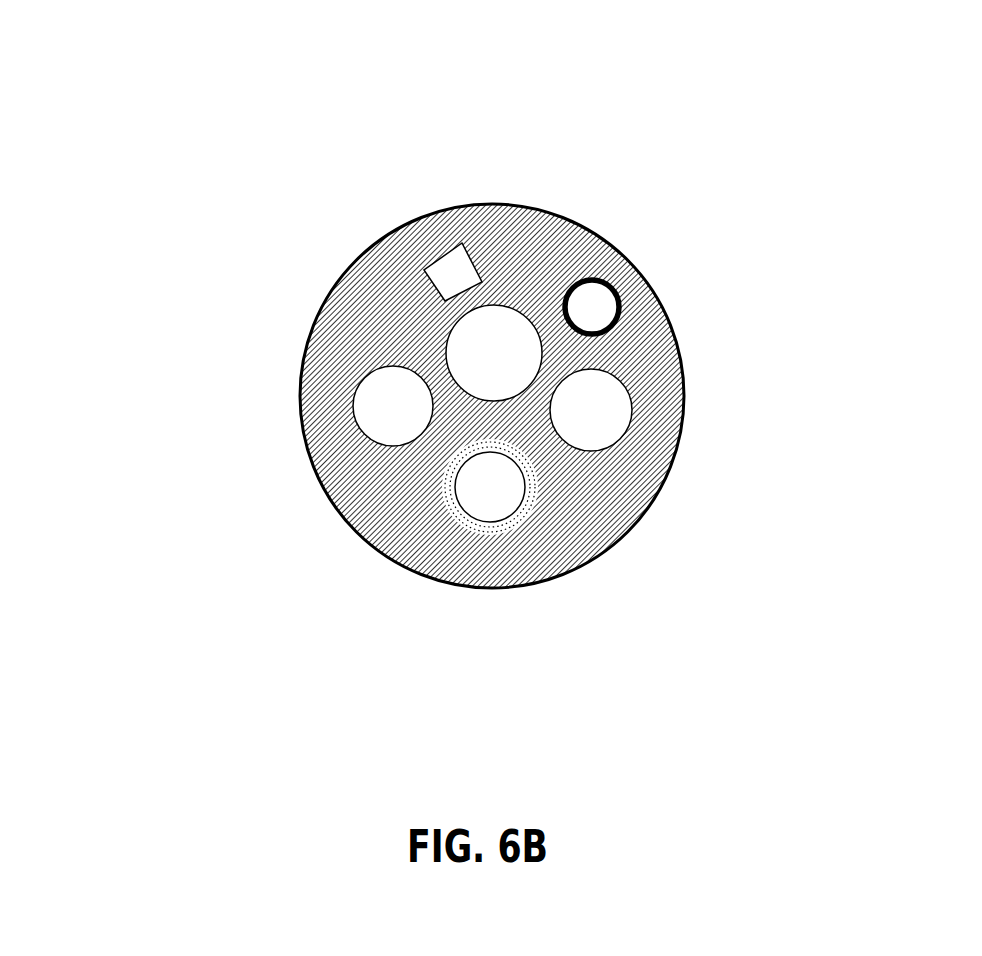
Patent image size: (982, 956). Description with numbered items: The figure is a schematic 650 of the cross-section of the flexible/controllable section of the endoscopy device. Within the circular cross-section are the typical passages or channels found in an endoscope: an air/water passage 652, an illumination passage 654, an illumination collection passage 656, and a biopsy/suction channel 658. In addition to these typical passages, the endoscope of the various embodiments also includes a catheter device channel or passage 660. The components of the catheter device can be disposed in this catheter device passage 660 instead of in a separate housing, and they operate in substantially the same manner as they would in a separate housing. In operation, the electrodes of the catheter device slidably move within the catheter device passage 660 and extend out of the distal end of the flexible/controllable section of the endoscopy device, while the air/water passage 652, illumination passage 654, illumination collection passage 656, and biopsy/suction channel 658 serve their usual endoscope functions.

The schematic of the cross-section 650 is at (492, 168).
The air/water passage 652 is at (438, 260).
The illumination passage 654 is at (405, 408).
The illumination collection passage 656 is at (495, 338).
The biopsy/suction channel 658 is at (475, 498).
The catheter device passage 660 is at (640, 308).